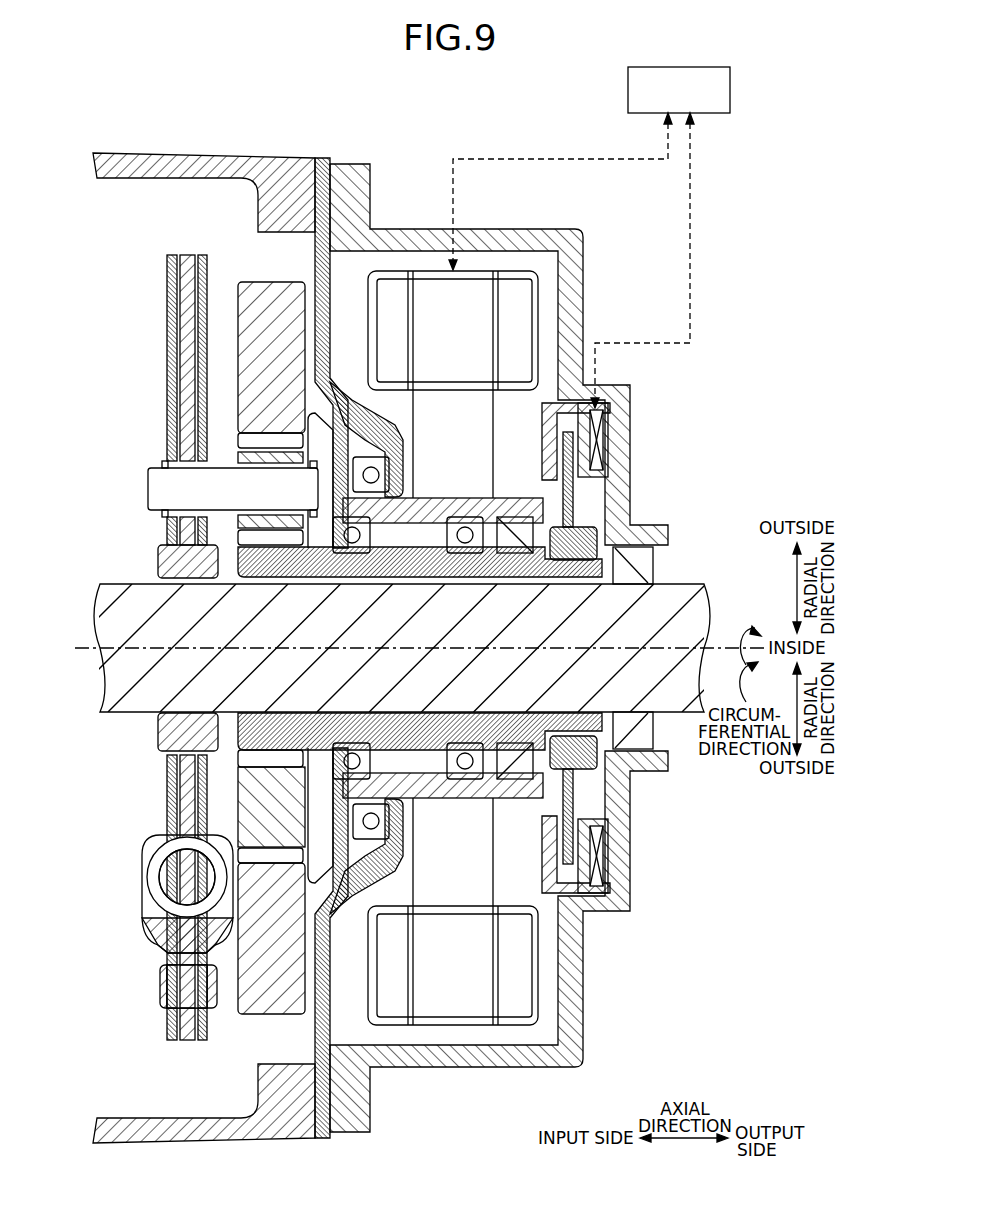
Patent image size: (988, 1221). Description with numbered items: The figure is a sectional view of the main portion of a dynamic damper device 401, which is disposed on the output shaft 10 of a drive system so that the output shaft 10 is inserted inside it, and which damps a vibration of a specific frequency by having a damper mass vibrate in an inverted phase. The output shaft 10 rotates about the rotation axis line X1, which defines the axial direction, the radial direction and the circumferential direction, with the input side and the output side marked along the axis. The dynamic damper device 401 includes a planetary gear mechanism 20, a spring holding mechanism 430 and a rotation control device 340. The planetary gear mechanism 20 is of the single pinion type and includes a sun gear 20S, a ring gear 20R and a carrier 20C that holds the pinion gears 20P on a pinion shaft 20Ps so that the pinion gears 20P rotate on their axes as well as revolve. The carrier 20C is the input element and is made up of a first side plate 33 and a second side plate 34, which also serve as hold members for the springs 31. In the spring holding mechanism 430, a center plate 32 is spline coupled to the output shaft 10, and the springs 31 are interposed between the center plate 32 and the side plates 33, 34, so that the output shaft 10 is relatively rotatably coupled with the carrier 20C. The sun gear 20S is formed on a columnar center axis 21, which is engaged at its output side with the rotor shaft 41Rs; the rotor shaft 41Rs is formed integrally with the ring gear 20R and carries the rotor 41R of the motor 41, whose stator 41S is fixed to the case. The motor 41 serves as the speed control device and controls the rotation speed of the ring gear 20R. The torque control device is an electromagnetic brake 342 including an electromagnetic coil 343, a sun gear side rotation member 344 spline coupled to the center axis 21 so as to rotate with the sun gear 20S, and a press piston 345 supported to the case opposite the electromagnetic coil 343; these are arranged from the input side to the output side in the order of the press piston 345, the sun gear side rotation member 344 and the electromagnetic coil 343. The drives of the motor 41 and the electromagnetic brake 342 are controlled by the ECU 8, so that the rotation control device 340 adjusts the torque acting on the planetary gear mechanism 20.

The dynamic damper device 401 is at (430, 124).
The ECU 8 is at (733, 90).
The motor 41 is at (483, 262).
The stator 41S is at (453, 305).
The rotor 41R is at (453, 412).
The planetary gear mechanism 20 is at (247, 277).
The ring gear 20R is at (267, 280).
The carrier 20C is at (118, 268).
The first side plate 33 is at (195, 281).
The second side plate 34 is at (168, 318).
The pinion gear 20P is at (271, 438).
The pinion shaft 20Ps is at (272, 535).
The sun gear 20S is at (265, 508).
The output shaft 10 is at (120, 583).
The center axis 21 is at (258, 712).
The rotation control device 340 is at (740, 320).
The electromagnetic brake 342 is at (714, 410).
The press piston 345 is at (587, 424).
The electromagnetic coil 343 is at (597, 458).
The rotor shaft 41Rs is at (563, 483).
The sun gear side rotation member 344 is at (573, 508).
The rotation axis line X1 is at (726, 645).
The center plate 32 is at (188, 805).
The spring 31 is at (157, 876).
The spring holding mechanism 430 is at (140, 1028).